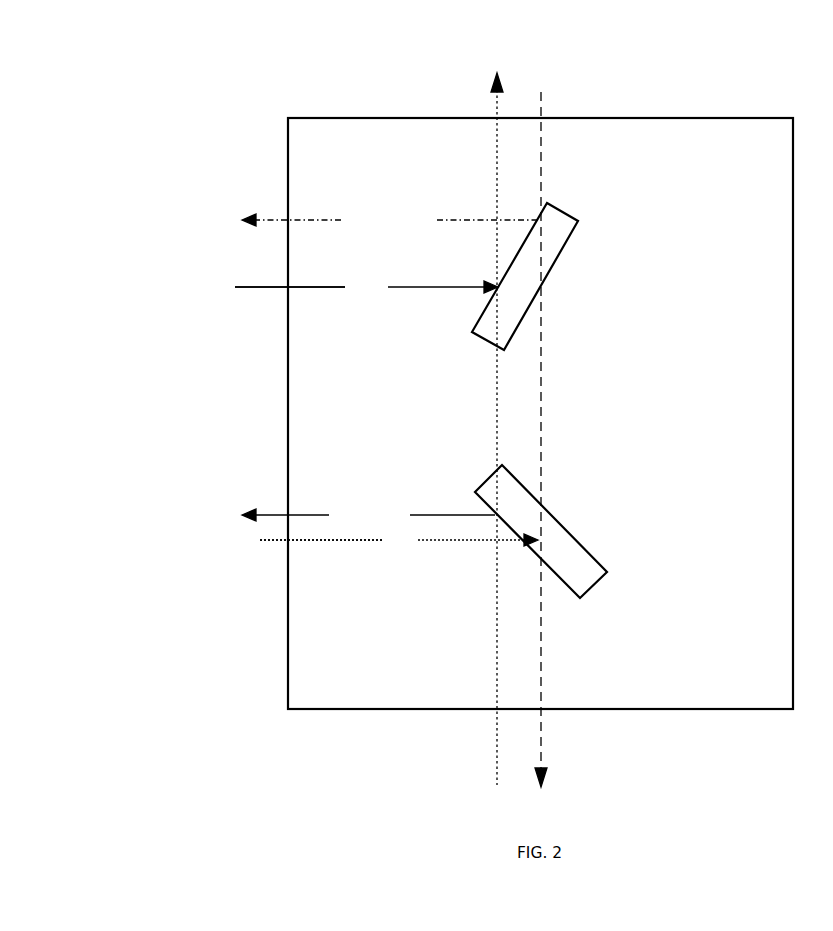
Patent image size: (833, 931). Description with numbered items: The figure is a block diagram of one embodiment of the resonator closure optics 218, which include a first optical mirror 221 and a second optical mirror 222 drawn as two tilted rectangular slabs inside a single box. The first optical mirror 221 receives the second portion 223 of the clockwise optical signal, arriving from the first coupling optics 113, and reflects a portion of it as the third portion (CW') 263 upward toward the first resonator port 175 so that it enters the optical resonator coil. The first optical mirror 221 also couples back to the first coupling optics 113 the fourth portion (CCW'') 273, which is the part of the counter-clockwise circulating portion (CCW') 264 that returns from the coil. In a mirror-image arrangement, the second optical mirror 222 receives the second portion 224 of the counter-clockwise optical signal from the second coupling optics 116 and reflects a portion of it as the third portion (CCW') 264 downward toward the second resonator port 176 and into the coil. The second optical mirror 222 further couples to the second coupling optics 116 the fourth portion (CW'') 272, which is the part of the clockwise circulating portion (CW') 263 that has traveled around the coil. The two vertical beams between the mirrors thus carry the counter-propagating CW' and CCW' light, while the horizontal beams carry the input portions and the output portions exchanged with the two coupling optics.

The resonator closure optics 218 is at (693, 278).
The first optical mirror 221 is at (563, 210).
The second optical mirror 222 is at (593, 588).
The second portion of CW optical signal 223 is at (366, 287).
The second portion of CCW optical signal 224 is at (399, 539).
The third portion (CW') 263 is at (499, 437).
The third portion (CCW') 264 is at (544, 431).
The fourth portion (CW'') 272 is at (368, 514).
The fourth portion (CCW'') 273 is at (391, 221).
The first resonator port 175 is at (497, 158).
The second resonator port 176 is at (541, 633).
The first coupling optics 113 is at (212, 278).
The second coupling optics 116 is at (239, 560).